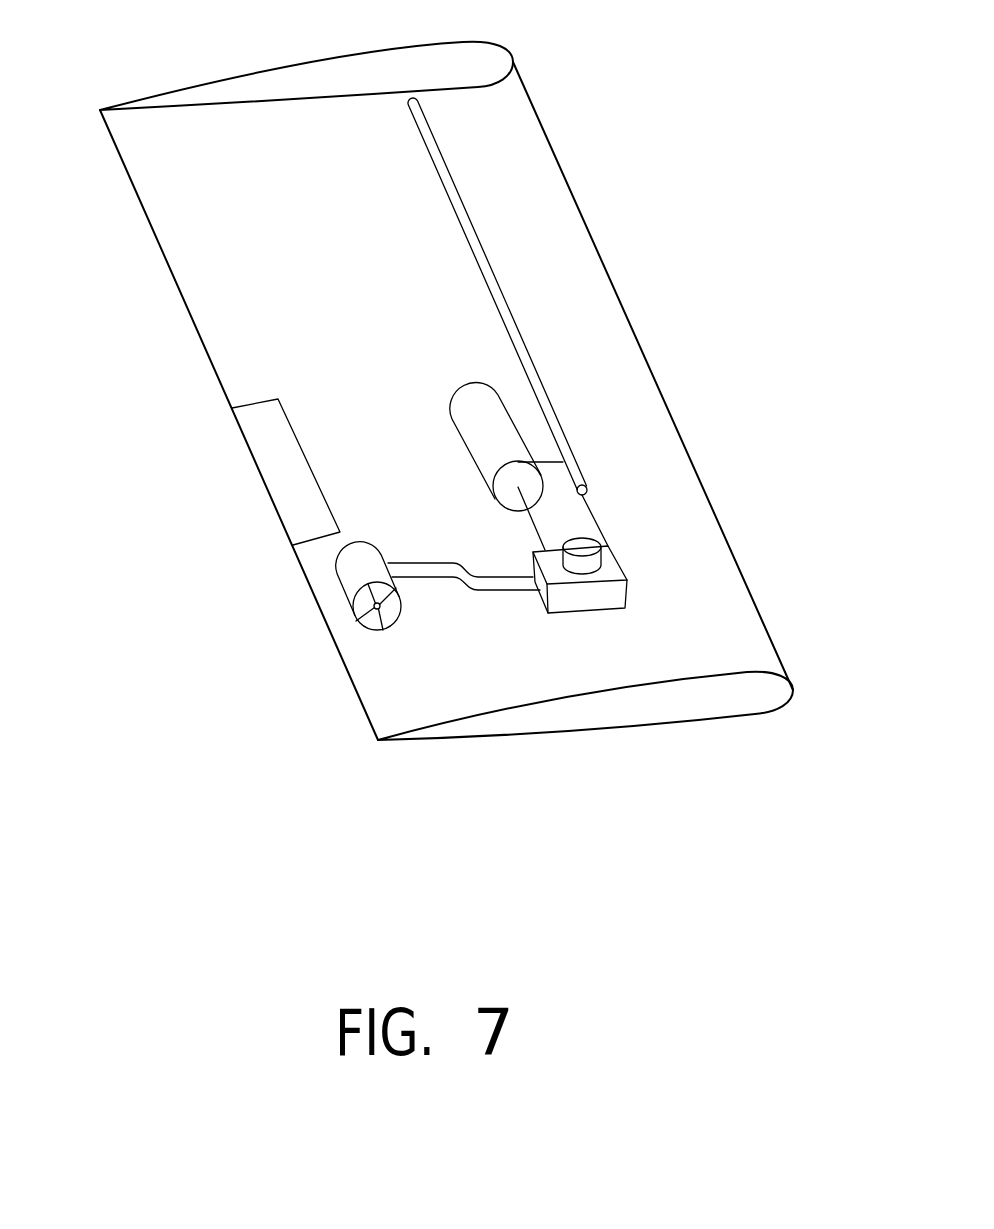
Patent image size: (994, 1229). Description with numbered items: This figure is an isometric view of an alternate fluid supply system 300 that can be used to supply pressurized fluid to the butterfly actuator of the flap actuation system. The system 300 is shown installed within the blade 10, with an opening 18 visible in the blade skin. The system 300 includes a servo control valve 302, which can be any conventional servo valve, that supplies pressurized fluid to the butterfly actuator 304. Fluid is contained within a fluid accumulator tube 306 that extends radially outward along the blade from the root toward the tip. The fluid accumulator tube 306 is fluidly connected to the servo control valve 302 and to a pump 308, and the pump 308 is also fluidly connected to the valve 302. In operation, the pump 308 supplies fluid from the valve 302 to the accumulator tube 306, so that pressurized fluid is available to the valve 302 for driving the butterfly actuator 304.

The wing / airfoil body 10 is at (533, 208).
The skin panel opening 18 is at (280, 468).
The fluid supply system 300 is at (317, 708).
The servo control valve 302 is at (615, 592).
The butterfly actuator 304 is at (362, 568).
The fluid accumulator tube 306 is at (517, 333).
The pump 308 is at (472, 400).